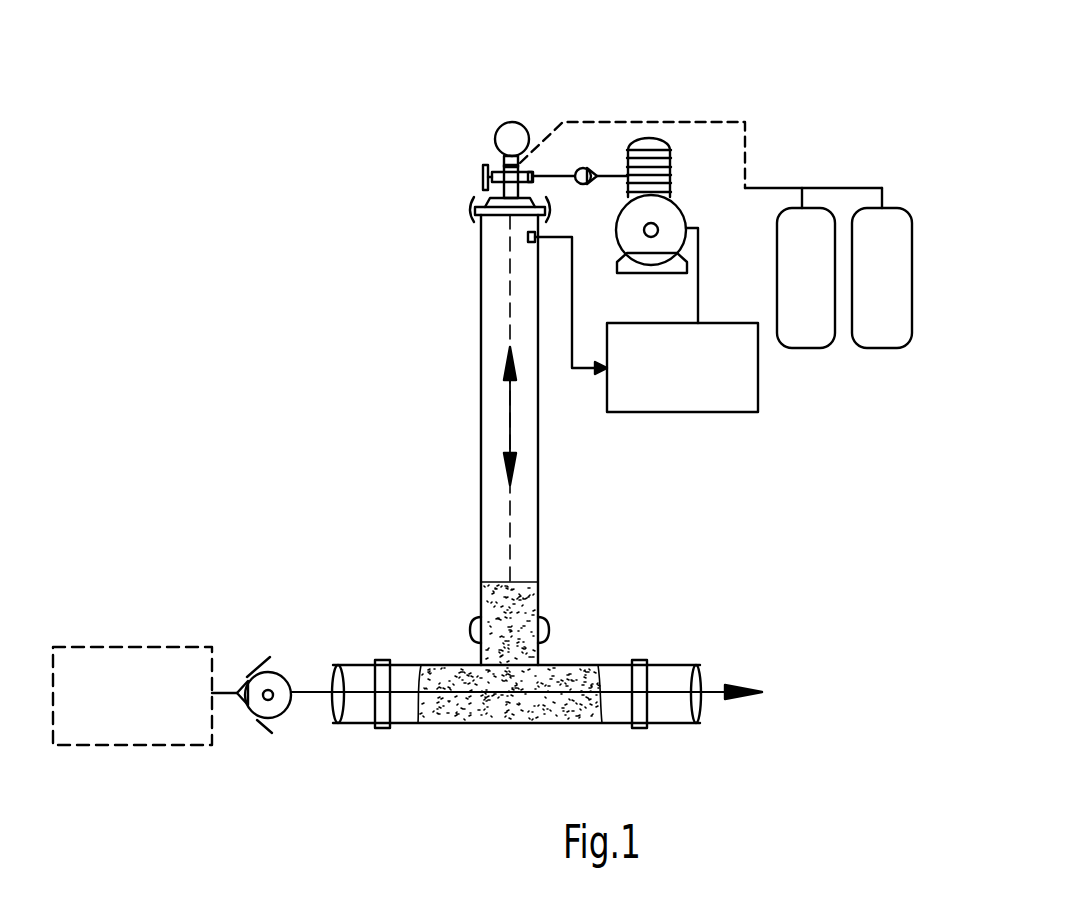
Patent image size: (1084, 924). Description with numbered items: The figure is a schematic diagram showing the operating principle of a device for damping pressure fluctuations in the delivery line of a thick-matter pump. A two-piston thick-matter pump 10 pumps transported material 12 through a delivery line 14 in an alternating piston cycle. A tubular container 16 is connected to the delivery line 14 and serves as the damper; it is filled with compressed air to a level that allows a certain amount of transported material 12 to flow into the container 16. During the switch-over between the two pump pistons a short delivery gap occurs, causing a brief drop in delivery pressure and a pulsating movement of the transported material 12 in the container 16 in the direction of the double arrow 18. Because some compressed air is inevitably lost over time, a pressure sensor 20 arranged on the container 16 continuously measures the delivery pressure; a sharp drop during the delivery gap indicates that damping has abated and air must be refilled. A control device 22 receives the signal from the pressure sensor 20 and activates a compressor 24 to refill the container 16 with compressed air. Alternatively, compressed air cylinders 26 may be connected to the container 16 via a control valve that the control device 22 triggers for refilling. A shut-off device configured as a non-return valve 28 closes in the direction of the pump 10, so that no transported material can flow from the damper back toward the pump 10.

The two-piston thick-matter pump 10 is at (100, 653).
The transported material 12 is at (510, 627).
The delivery line 14 is at (365, 680).
The tubular container 16 is at (482, 398).
The double arrow 18 is at (512, 417).
The pressure sensor 20 is at (530, 237).
The control device 22 is at (758, 363).
The compressor 24 is at (670, 167).
The compressed air cylinders 26 is at (912, 262).
The non-return valve 28 is at (258, 722).